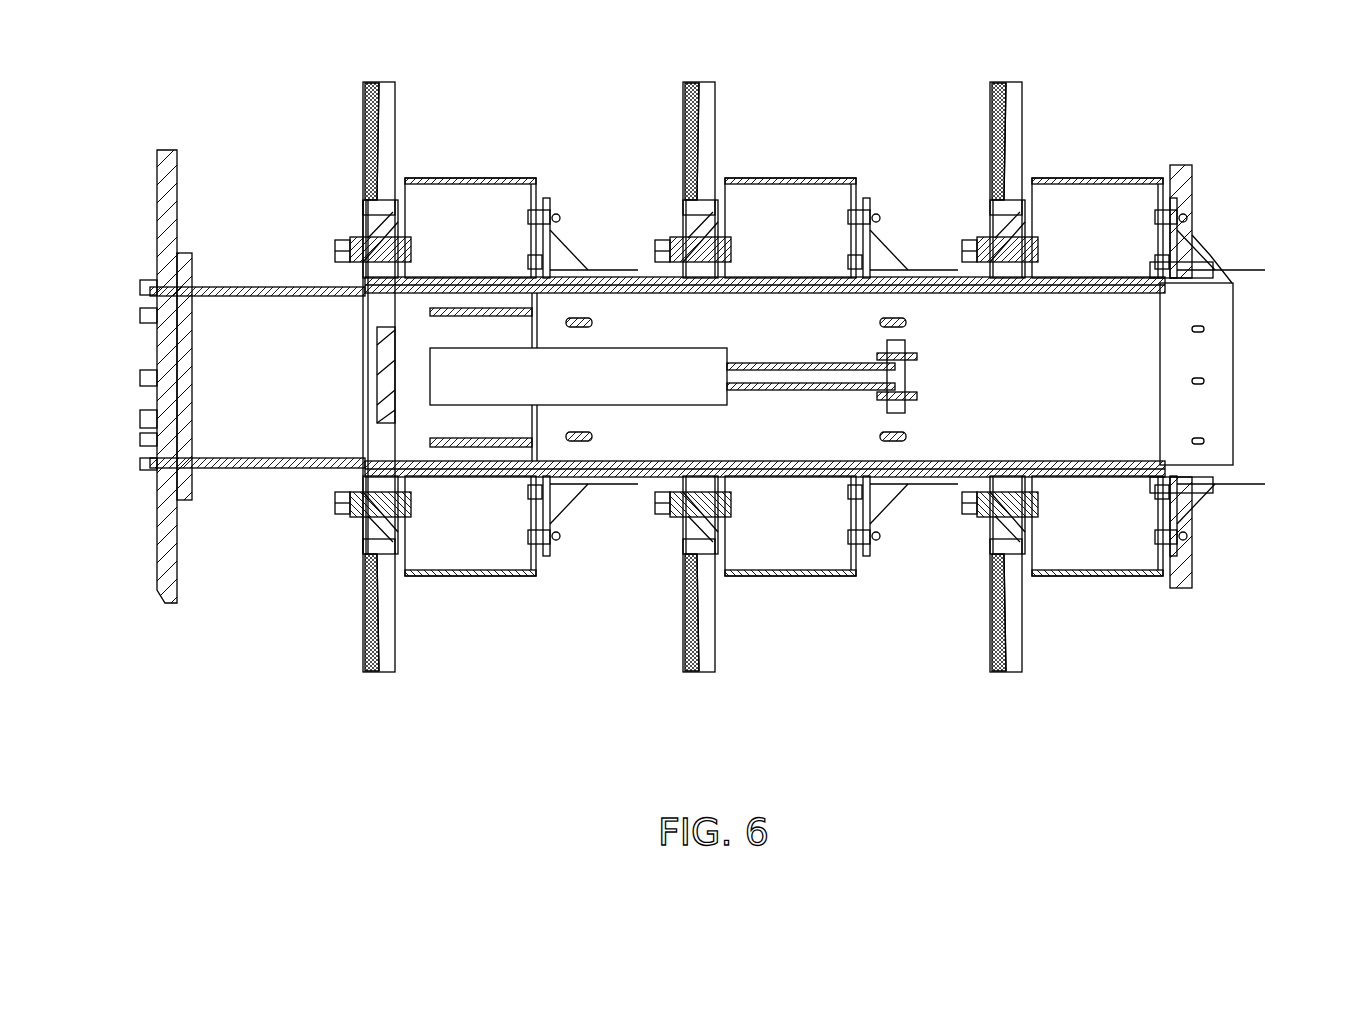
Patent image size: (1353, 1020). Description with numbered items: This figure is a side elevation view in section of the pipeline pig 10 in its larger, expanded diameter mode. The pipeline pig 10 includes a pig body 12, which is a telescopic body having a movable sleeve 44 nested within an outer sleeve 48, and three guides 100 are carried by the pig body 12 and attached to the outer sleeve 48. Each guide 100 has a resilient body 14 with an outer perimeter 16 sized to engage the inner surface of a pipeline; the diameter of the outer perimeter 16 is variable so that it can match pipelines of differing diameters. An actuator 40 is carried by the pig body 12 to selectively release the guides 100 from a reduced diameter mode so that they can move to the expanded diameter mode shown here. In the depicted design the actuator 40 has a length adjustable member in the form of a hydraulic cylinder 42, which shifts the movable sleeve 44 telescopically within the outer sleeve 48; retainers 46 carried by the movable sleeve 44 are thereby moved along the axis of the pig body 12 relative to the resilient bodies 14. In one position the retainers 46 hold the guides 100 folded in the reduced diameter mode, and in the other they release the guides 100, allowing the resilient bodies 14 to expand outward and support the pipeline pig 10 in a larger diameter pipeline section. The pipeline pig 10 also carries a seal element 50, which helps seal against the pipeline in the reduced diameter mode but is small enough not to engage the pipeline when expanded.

The pipeline pig 10 is at (1262, 154).
The pig body 12 is at (985, 460).
The resilient body 14 is at (367, 588).
The outer perimeter 16 is at (367, 670).
The actuator 40 is at (468, 388).
The hydraulic cylinder 42 is at (470, 362).
The movable sleeve 44 is at (1102, 455).
The retainers 46 is at (468, 178).
The outer sleeve 48 is at (652, 277).
The seal element 50 is at (175, 566).
The guides 100 is at (380, 102).